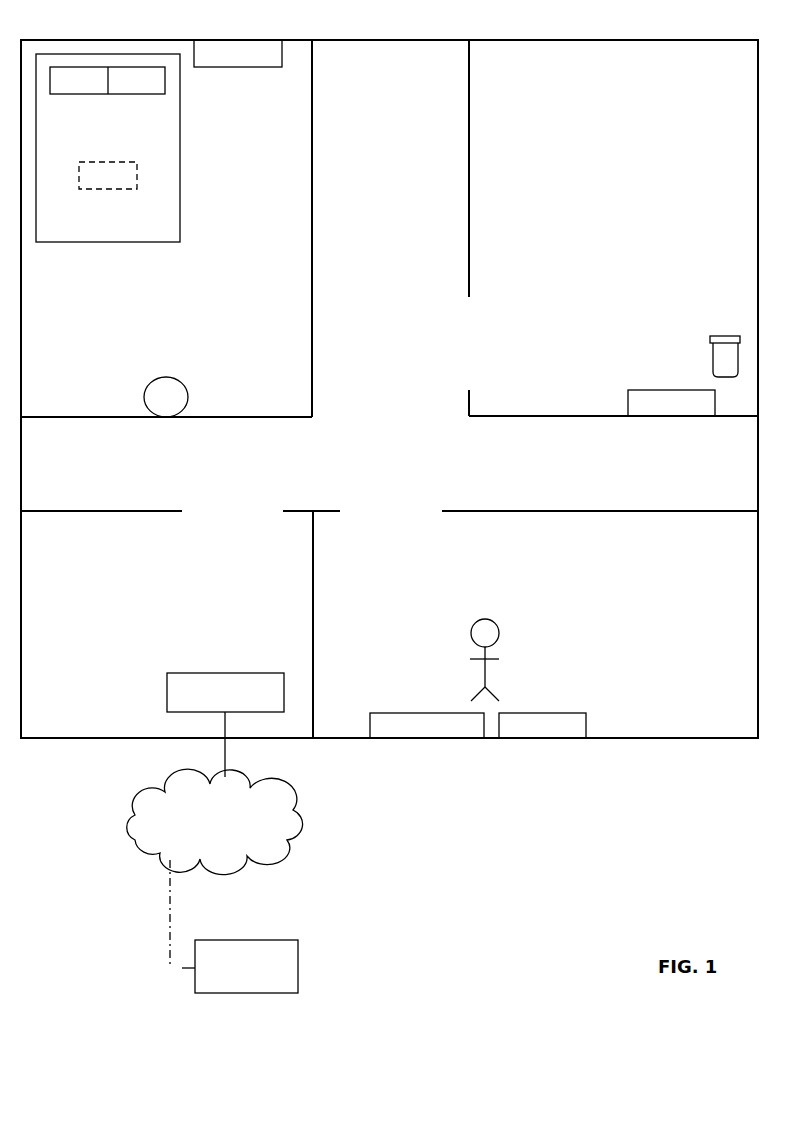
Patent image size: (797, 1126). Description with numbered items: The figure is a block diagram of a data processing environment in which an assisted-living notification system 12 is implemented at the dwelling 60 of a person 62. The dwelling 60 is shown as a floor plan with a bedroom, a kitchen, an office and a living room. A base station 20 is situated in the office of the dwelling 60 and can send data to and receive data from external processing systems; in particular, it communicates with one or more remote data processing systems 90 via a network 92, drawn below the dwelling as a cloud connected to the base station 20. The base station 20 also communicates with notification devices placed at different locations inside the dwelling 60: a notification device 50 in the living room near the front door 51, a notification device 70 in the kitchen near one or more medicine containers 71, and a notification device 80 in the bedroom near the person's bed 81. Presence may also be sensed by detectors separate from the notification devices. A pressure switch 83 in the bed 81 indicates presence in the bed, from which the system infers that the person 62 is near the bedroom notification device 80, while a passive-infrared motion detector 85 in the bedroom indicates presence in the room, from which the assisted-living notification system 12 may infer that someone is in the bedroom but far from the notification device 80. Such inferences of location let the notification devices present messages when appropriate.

The assisted-living notification system 12 is at (603, 834).
The base station 20 is at (225, 725).
The notification device 50 is at (542, 725).
The front door 51 is at (392, 741).
The dwelling 60 is at (389, 389).
The person 62 is at (455, 613).
The notification device 70 is at (671, 403).
The medicine container 71 is at (713, 362).
The notification device 80 is at (238, 53).
The bed 81 is at (108, 148).
The pressure switch 83 is at (108, 175).
The passive-infrared motion detector 85 is at (166, 397).
The remote data processing system 90 is at (298, 965).
The network 92 is at (275, 845).